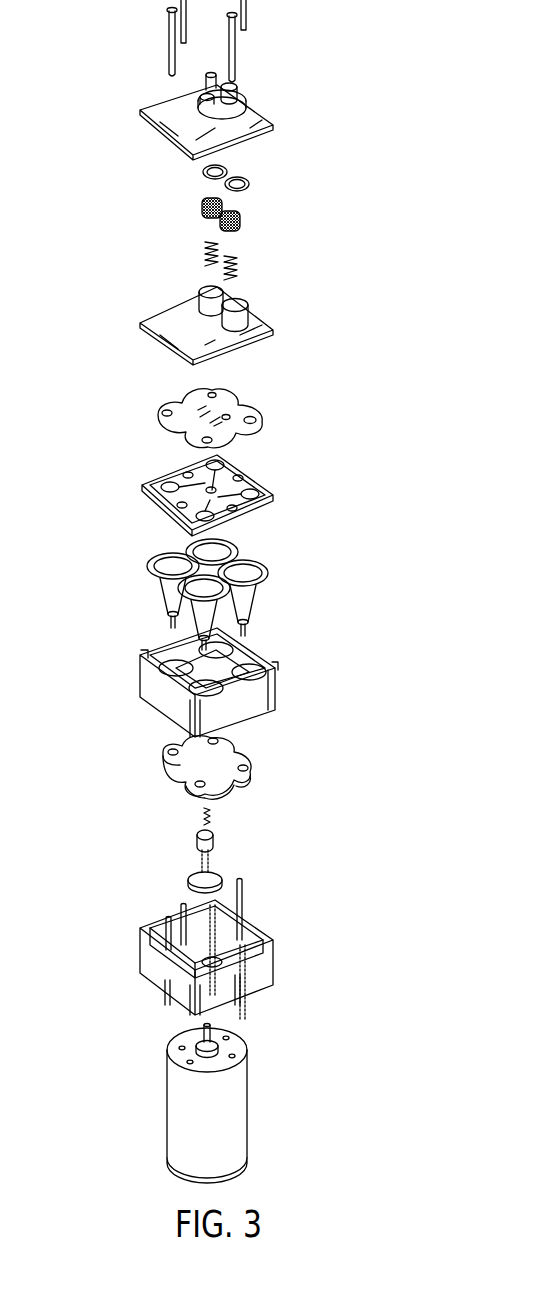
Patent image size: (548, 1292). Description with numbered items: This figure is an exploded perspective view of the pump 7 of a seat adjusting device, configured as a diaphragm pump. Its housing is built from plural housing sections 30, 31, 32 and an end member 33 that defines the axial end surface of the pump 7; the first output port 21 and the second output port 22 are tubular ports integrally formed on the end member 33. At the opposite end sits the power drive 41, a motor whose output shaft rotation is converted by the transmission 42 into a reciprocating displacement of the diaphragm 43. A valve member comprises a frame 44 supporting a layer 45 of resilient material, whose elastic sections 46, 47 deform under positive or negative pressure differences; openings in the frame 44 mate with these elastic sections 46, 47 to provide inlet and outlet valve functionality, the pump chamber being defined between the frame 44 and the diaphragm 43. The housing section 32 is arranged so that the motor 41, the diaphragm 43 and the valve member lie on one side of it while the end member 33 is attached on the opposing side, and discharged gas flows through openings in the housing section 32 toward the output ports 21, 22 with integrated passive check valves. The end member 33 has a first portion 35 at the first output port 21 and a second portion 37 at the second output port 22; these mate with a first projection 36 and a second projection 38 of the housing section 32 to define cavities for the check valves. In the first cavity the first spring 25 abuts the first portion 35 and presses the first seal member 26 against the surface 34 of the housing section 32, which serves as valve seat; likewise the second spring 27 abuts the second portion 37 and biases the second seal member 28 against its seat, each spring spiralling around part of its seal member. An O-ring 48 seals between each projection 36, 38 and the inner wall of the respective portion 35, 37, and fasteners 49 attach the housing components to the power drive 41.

The pump 7 is at (404, 62).
The first output port 21 is at (233, 90).
The second output port 22 is at (208, 73).
The first spring 25 is at (237, 225).
The first seal member 26 is at (237, 270).
The second spring 27 is at (203, 213).
The second seal member 28 is at (203, 258).
The housing section 30 is at (140, 960).
The housing section 31 is at (143, 685).
The housing section 32 is at (140, 323).
The end member 33 is at (140, 110).
The surface 34 is at (213, 337).
The first portion 35 is at (247, 115).
The first projection 36 is at (240, 304).
The second portion 37 is at (203, 103).
The second projection 38 is at (198, 290).
The power drive 41 is at (165, 1127).
The transmission 42 is at (137, 725).
The diaphragm 43 is at (148, 563).
The frame 44 is at (142, 485).
The layer 45 is at (153, 413).
The elastic section 46 is at (255, 420).
The elastic section 47 is at (229, 413).
The O-ring 48 is at (203, 170).
The fastener 49 is at (232, 52).